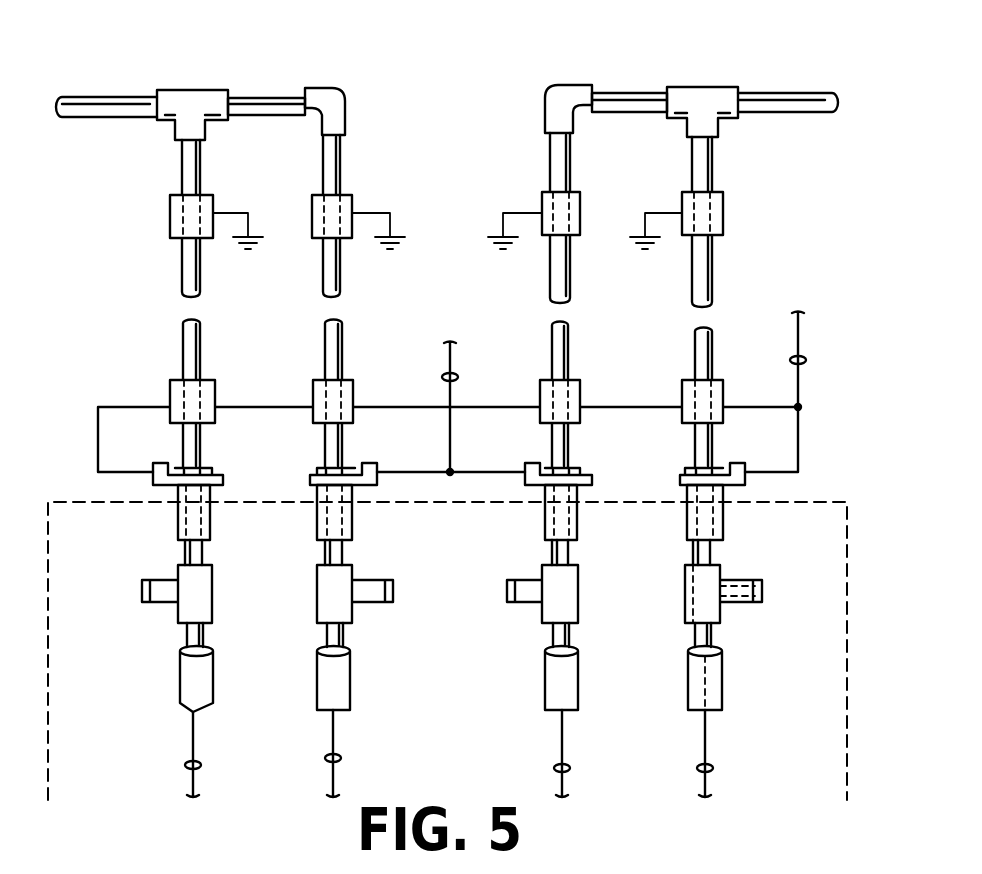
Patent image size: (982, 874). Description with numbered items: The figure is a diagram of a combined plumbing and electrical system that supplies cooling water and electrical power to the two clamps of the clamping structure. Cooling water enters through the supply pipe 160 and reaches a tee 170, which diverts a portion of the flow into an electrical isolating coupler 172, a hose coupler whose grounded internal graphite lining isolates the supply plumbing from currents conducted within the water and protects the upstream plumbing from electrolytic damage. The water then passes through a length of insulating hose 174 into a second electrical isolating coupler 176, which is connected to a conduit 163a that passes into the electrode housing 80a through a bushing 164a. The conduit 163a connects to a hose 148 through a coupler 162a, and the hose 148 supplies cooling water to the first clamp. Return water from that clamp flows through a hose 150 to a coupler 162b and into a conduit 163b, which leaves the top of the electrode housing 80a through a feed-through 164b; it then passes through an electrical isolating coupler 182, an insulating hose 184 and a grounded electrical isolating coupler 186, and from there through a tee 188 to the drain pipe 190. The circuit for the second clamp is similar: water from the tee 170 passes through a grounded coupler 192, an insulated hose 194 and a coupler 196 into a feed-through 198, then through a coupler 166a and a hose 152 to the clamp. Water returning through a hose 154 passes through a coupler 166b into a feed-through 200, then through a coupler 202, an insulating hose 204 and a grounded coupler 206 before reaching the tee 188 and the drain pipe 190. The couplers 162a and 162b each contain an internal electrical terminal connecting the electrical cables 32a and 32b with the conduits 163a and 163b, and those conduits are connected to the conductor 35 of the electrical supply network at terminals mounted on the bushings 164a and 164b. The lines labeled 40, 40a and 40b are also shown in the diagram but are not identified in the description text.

The drain pipe 190 is at (103, 92).
The tee 188 is at (203, 97).
The grounded electrical isolating coupler 186 is at (172, 202).
The grounded coupler 206 is at (350, 200).
The insulating hose 204 is at (325, 290).
The pipe 160 is at (845, 91).
The tee 170 is at (712, 87).
The grounded coupler 192 is at (545, 192).
The electrical isolating coupler 172 is at (723, 195).
The insulating hose 174 is at (712, 290).
The insulating hose 184 is at (183, 322).
The electrical isolating coupler 182 is at (172, 387).
The coupler 202 is at (315, 387).
The insulated hose 194 is at (570, 335).
The coupler 196 is at (578, 382).
The electrical isolating coupler 176 is at (720, 382).
The supply line 40 is at (455, 377).
The conductor 35 is at (800, 360).
The electrode housing 80a is at (823, 500).
The bushing 164b is at (212, 512).
The conduit 163b is at (239, 553).
The coupler 162b is at (178, 570).
The feed-through 200 is at (352, 512).
The coupler 166b is at (355, 570).
The feed-through 198 is at (545, 518).
The coupler 166a is at (542, 565).
The bushing 164a is at (685, 510).
The conduit 163a is at (720, 545).
The coupler 162a is at (727, 565).
The hose 150 is at (180, 665).
The hose 154 is at (352, 673).
The hose 152 is at (545, 673).
The hose 148 is at (723, 672).
The electrical cable 32b is at (185, 765).
The line 40b is at (340, 760).
The line 40a is at (557, 768).
The electrical cable 32a is at (712, 768).